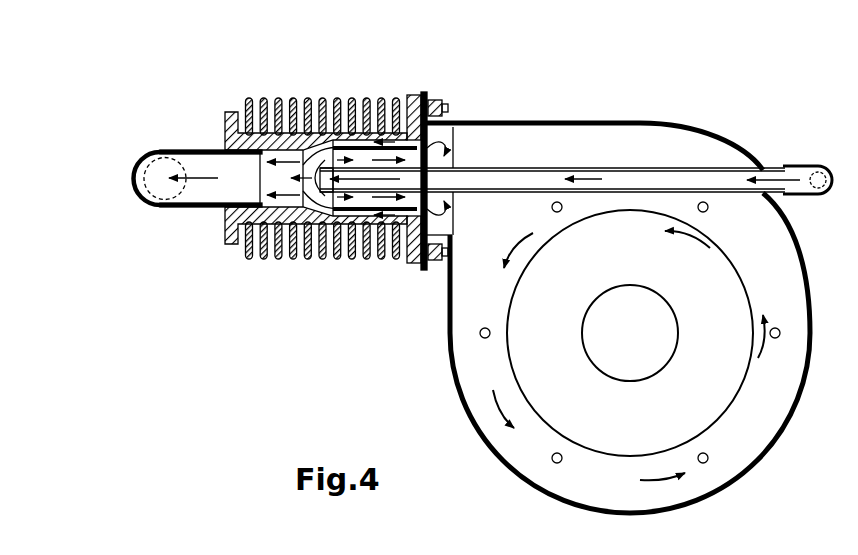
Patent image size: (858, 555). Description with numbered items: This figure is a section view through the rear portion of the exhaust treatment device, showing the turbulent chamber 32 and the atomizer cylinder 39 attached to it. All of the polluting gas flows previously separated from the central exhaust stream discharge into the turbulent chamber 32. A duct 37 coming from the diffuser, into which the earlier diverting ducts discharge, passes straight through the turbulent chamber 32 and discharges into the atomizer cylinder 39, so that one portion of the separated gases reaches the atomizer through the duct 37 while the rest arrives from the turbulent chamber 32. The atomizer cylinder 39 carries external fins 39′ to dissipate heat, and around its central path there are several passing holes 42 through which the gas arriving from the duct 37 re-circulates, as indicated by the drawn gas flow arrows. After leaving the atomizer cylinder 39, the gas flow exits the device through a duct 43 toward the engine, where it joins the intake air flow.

The turbulent chamber 32 is at (597, 512).
The duct 37 is at (735, 180).
The atomizer cylinder 39 is at (341, 270).
The external fins 39′ is at (300, 98).
The passing holes 42 is at (360, 122).
The duct 43 is at (158, 184).